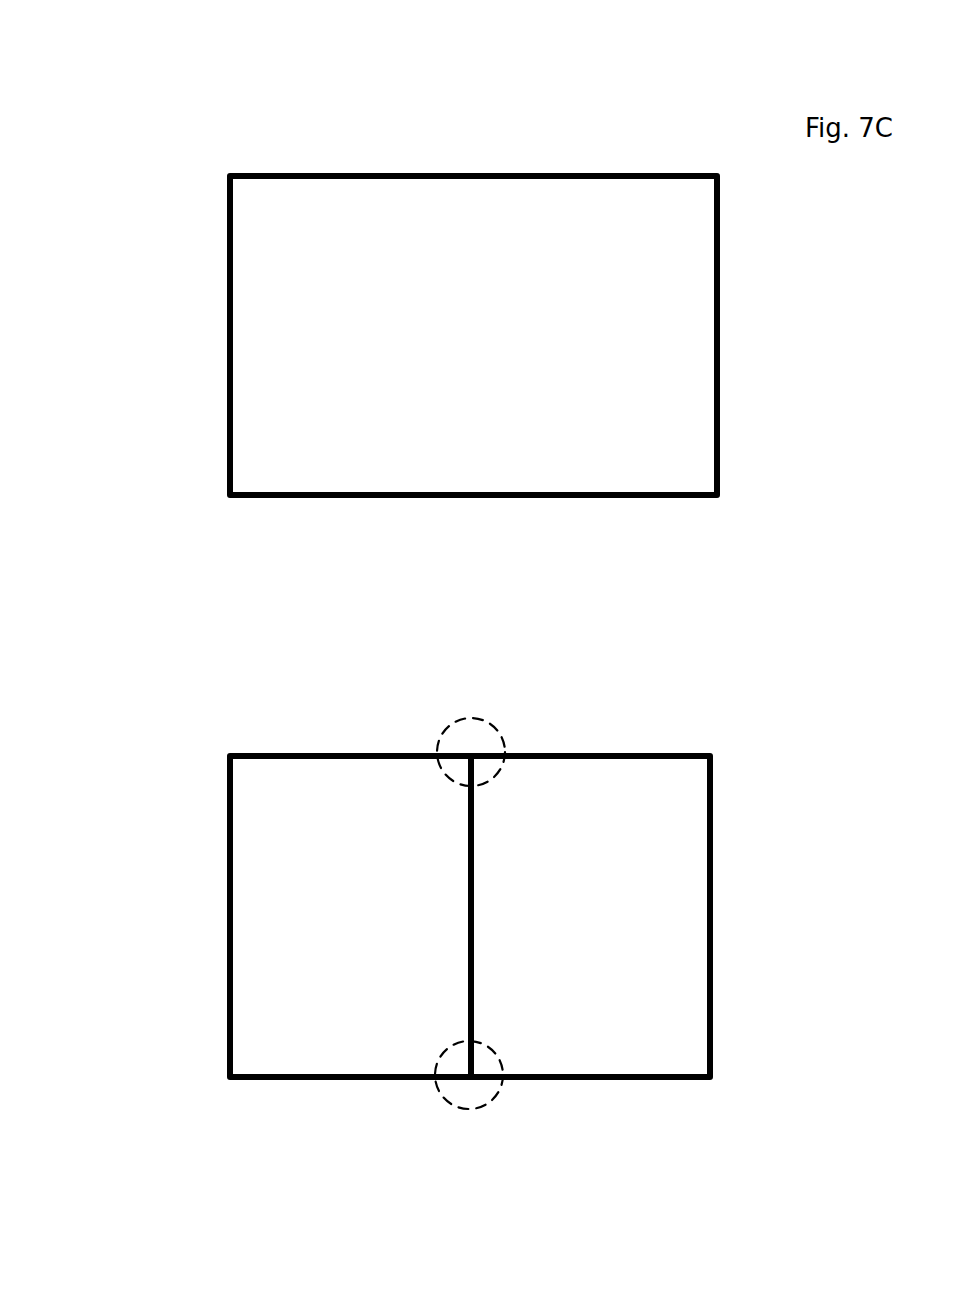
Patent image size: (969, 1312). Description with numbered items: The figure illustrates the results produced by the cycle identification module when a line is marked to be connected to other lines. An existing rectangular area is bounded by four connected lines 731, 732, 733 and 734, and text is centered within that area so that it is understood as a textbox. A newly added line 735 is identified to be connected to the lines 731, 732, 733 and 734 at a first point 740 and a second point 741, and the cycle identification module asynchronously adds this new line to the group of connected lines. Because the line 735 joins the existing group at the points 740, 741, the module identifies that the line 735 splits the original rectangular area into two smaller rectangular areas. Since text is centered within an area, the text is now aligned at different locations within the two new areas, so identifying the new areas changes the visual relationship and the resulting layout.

The line 731 is at (473, 172).
The line 732 is at (720, 340).
The line 733 is at (488, 498).
The line 734 is at (228, 338).
The newly added line 735 is at (455, 890).
The point 740 is at (498, 735).
The point 741 is at (432, 1090).